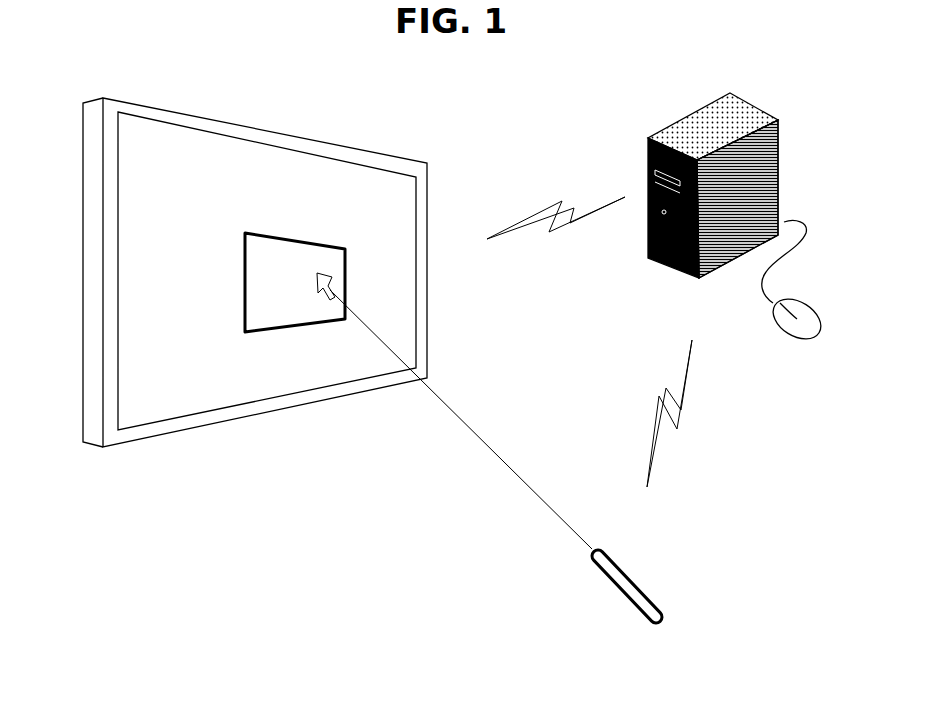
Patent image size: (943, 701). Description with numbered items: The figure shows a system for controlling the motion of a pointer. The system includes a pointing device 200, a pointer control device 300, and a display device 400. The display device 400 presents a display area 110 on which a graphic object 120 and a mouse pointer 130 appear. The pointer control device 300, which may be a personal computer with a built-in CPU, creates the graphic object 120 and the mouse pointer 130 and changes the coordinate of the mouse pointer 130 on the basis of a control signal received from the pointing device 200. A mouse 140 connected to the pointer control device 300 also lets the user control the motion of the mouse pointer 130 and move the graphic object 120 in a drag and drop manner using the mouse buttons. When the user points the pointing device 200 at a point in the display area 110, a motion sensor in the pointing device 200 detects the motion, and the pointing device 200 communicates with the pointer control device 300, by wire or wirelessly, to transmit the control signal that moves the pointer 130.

The display area 110 is at (222, 148).
The graphic object 120 is at (245, 253).
The mouse pointer 130 is at (329, 276).
The mouse 140 is at (812, 304).
The pointing device 200 is at (649, 596).
The pointer control device 300 is at (757, 104).
The display device 400 is at (92, 273).